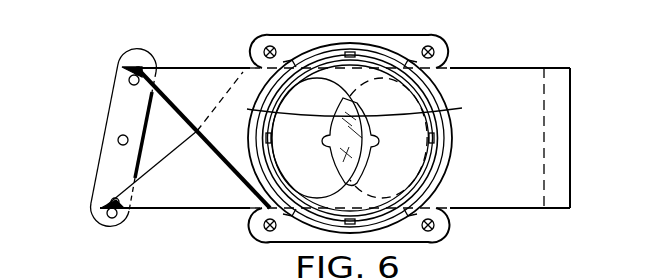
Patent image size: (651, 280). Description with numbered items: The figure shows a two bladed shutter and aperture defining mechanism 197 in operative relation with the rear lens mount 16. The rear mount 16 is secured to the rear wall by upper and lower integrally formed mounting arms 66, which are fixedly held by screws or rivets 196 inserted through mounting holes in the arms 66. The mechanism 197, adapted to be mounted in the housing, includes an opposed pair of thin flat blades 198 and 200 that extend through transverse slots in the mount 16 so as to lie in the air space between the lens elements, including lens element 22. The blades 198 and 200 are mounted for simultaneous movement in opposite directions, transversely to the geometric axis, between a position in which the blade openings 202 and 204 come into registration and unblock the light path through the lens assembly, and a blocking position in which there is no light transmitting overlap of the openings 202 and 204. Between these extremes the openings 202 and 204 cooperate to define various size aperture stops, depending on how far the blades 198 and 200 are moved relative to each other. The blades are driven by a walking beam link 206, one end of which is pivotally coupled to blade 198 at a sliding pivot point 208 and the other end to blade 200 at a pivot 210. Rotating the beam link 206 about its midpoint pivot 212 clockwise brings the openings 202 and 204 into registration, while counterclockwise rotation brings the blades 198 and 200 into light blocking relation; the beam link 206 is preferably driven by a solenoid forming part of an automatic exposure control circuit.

The rear mount 16 is at (407, 27).
The lens element 22 is at (342, 160).
The mounting arms 66 is at (290, 45).
The screws or rivets 196 is at (437, 226).
The shutter and aperture defining mechanism 197 is at (493, 62).
The blade 198 is at (208, 193).
The blade 200 is at (182, 78).
The blade opening 202 is at (386, 138).
The blade opening 204 is at (284, 138).
The walking beam link 206 is at (118, 100).
The sliding pivot point 208 is at (120, 211).
The pivot 210 is at (137, 68).
The midpoint pivot 212 is at (117, 137).